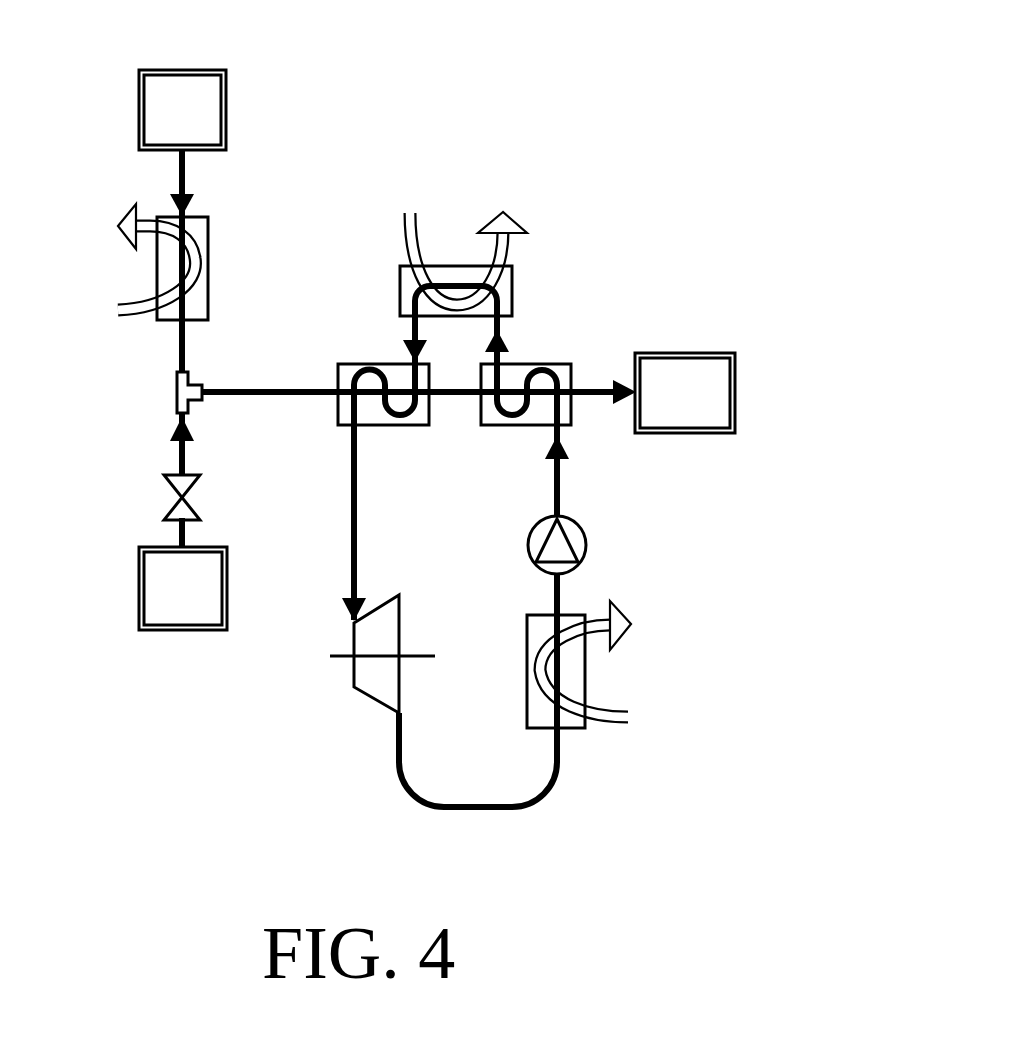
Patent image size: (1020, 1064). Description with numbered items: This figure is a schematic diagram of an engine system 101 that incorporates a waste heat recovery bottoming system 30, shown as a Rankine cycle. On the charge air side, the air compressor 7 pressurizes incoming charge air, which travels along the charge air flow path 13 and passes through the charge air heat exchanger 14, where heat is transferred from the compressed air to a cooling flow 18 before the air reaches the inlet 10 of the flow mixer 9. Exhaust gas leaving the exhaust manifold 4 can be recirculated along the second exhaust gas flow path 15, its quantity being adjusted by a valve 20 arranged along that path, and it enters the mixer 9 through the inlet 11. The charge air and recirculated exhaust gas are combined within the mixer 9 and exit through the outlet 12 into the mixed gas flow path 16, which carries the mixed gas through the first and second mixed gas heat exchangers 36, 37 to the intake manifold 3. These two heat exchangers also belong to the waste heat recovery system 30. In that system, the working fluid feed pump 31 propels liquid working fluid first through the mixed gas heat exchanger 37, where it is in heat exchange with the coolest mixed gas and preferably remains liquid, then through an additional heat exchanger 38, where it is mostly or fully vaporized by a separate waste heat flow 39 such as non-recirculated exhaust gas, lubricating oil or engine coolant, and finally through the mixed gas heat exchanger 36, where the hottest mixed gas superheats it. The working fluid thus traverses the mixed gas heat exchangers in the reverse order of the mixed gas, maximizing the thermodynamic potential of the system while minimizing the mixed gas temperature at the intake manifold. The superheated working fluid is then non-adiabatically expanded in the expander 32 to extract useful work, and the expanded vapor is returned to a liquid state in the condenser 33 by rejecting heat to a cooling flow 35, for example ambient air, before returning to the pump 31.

The engine system 101 is at (717, 87).
The waste heat recovery bottoming system 30 is at (770, 694).
The air compressor 7 is at (191, 124).
The charge air flow path 13 is at (185, 175).
The cooling flow 18 is at (118, 306).
The charge air heat exchanger 14 is at (212, 300).
The inlet of the flow mixer 10 is at (188, 368).
The flow mixer 9 is at (177, 388).
The inlet of the flow mixer 11 is at (176, 416).
The outlet of the mixer 12 is at (205, 394).
The mixed gas flow path 16 is at (283, 397).
The valve 20 is at (165, 503).
The second exhaust gas flow path 15 is at (182, 537).
The exhaust manifold 4 is at (191, 601).
The waste heat flow 39 is at (415, 226).
The additional heat exchanger 38 is at (513, 278).
The first mixed gas heat exchanger 36 is at (418, 427).
The second mixed gas heat exchanger 37 is at (569, 361).
The intake manifold 3 is at (694, 407).
The working fluid feed pump 31 is at (583, 525).
The expander 32 is at (363, 690).
The condenser 33 is at (540, 730).
The cooling flow 35 is at (631, 718).